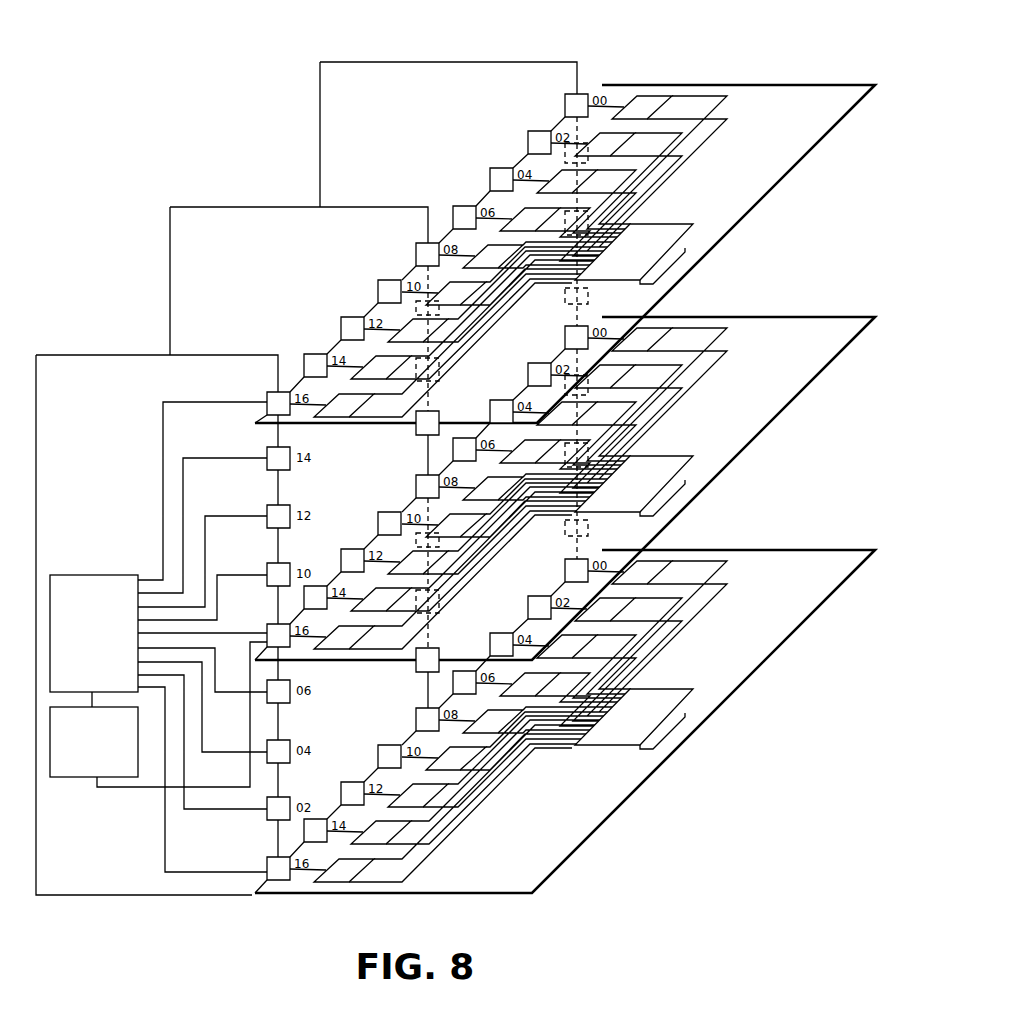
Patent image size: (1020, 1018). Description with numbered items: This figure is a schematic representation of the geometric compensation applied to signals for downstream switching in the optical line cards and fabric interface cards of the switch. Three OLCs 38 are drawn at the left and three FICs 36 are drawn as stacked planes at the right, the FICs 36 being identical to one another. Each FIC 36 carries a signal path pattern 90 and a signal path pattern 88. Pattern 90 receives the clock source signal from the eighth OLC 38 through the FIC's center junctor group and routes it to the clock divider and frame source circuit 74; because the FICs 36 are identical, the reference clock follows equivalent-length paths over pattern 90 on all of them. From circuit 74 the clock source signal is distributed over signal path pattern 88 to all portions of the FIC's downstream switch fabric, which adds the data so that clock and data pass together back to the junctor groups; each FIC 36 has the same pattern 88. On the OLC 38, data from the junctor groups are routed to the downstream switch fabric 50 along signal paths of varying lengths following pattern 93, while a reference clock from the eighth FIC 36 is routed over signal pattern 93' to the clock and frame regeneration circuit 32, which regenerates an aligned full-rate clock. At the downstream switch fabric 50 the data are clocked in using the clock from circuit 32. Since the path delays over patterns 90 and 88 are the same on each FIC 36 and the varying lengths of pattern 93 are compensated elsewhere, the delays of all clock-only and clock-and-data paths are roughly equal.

The OLC 38 is at (485, 62).
The FIC 36 is at (768, 85).
The clock divider and frame source circuit 74 is at (643, 469).
The signal path pattern 90 is at (648, 200).
The signal path pattern 88 is at (495, 348).
The downstream switch fabric 50 is at (104, 575).
The clock and frame regeneration circuit 32 is at (75, 777).
The signal path pattern 93 is at (184, 637).
The signal pattern 93' is at (182, 737).